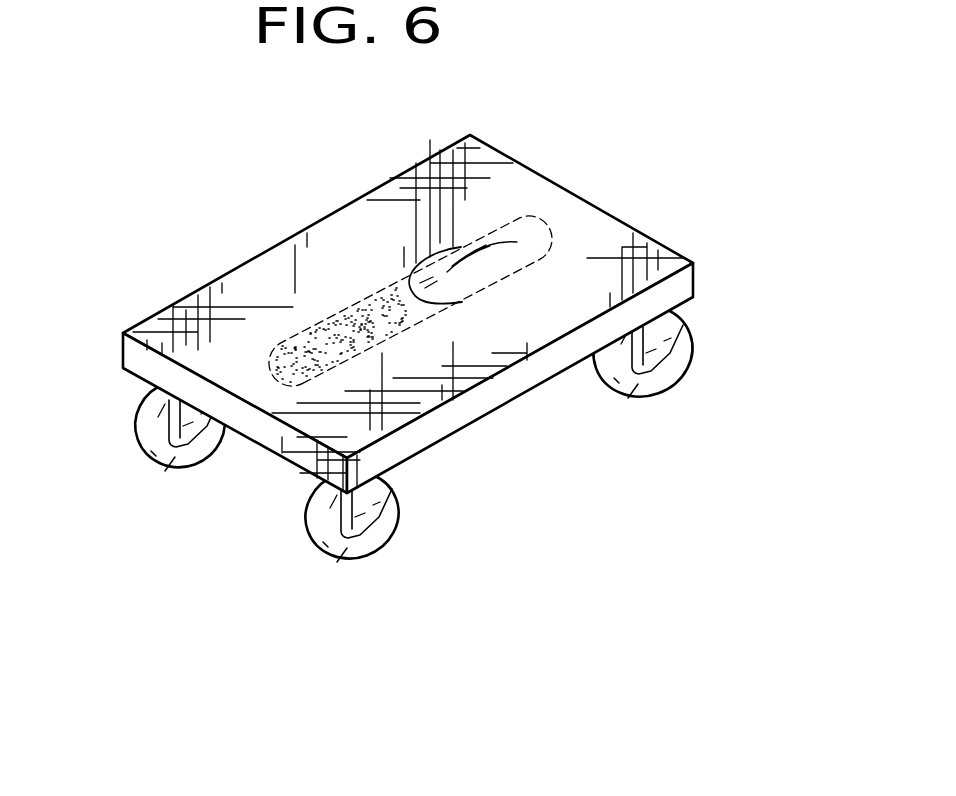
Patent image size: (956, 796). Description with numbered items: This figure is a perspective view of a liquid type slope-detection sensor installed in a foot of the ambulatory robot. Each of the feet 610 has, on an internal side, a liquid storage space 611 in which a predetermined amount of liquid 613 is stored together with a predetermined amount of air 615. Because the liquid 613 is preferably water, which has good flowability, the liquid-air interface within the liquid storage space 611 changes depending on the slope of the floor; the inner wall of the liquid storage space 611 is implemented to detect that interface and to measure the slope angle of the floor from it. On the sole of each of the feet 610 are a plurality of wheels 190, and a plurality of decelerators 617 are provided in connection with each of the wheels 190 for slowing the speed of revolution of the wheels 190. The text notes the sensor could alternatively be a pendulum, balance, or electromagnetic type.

The wheels 190 is at (646, 394).
The feet 610 is at (648, 178).
The liquid storage space 611 is at (383, 352).
The liquid 613 is at (355, 323).
The air 615 is at (462, 257).
The decelerators 617 is at (675, 343).